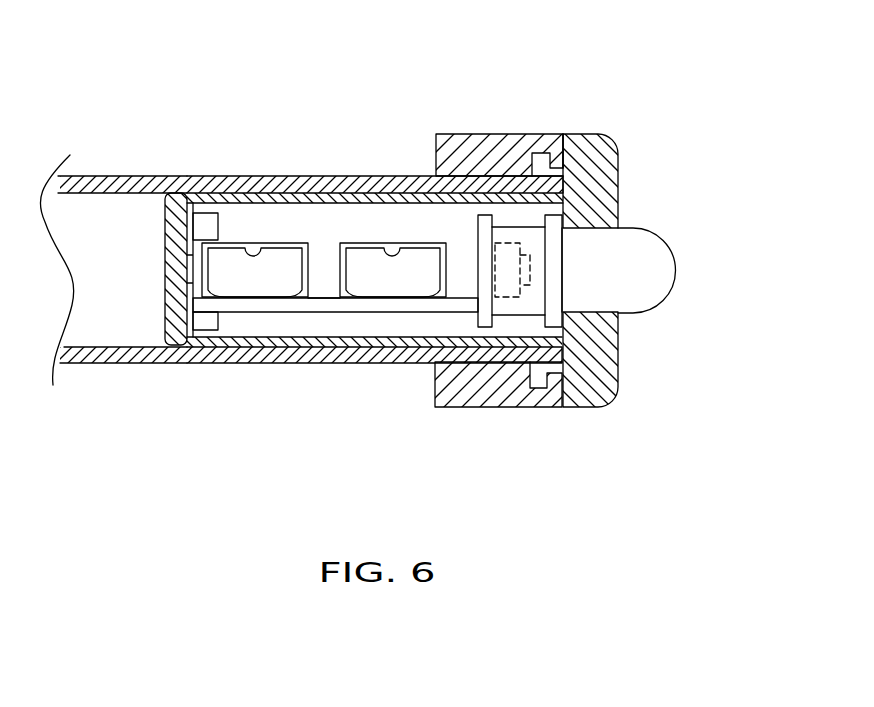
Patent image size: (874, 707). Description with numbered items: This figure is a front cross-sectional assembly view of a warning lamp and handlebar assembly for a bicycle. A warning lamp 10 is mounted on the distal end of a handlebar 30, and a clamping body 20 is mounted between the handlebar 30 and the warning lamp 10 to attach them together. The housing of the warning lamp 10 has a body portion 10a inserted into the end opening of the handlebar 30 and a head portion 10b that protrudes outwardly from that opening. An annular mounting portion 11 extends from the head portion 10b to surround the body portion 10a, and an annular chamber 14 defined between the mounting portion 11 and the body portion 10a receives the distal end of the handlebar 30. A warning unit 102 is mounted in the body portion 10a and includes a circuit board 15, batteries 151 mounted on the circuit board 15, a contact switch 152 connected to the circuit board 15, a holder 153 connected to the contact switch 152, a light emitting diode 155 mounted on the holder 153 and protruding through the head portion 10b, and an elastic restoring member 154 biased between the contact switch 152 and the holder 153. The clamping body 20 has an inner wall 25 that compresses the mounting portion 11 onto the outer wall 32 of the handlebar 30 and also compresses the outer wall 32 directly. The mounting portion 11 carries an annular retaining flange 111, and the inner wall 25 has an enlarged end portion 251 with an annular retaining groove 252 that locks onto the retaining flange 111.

The warning lamp 10 is at (377, 258).
The body portion 10a is at (327, 342).
The head portion 10b is at (618, 383).
The mounting portion 11 is at (540, 176).
The annular chamber 14 is at (567, 186).
The circuit board 15 is at (465, 288).
The clamping body 20 is at (552, 227).
The inner wall 25 is at (483, 178).
The handlebar 30 is at (308, 219).
The outer wall 32 is at (215, 175).
The warning unit 102 is at (322, 233).
The annular retaining flange 111 is at (547, 137).
The battery 151 is at (267, 277).
The contact switch 152 is at (507, 292).
The holder 153 is at (553, 321).
The elastic restoring member 154 is at (502, 313).
The light emitting diode 155 is at (673, 252).
The enlarged end portion 251 is at (563, 353).
The annular retaining groove 252 is at (548, 378).